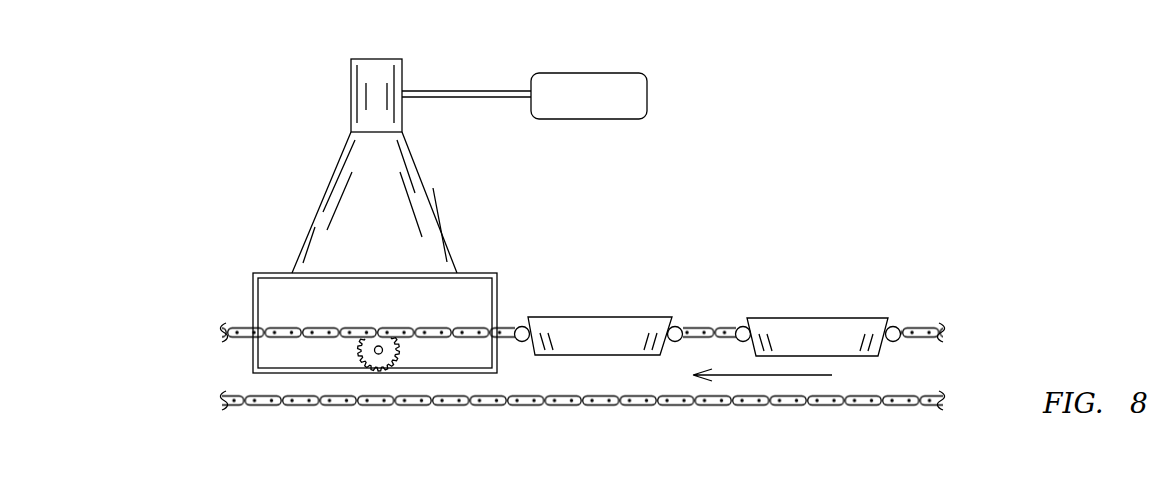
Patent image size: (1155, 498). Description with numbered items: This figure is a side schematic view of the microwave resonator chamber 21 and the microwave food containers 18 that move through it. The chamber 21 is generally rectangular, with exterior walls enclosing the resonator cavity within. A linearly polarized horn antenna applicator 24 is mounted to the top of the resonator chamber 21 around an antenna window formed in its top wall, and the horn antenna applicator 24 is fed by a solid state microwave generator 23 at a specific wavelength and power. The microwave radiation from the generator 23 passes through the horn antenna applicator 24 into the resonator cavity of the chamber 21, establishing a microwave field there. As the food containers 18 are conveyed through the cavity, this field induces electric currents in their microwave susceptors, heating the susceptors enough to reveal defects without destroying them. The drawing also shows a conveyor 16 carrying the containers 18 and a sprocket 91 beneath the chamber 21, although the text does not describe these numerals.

The conveyor chain 16 is at (765, 376).
The microwave food container 18 is at (598, 316).
The microwave resonator chamber 21 is at (272, 262).
The solid state microwave generator 23 is at (589, 73).
The linearly polarized horn antenna applicator 24 is at (431, 196).
The sprocket 91 is at (380, 360).